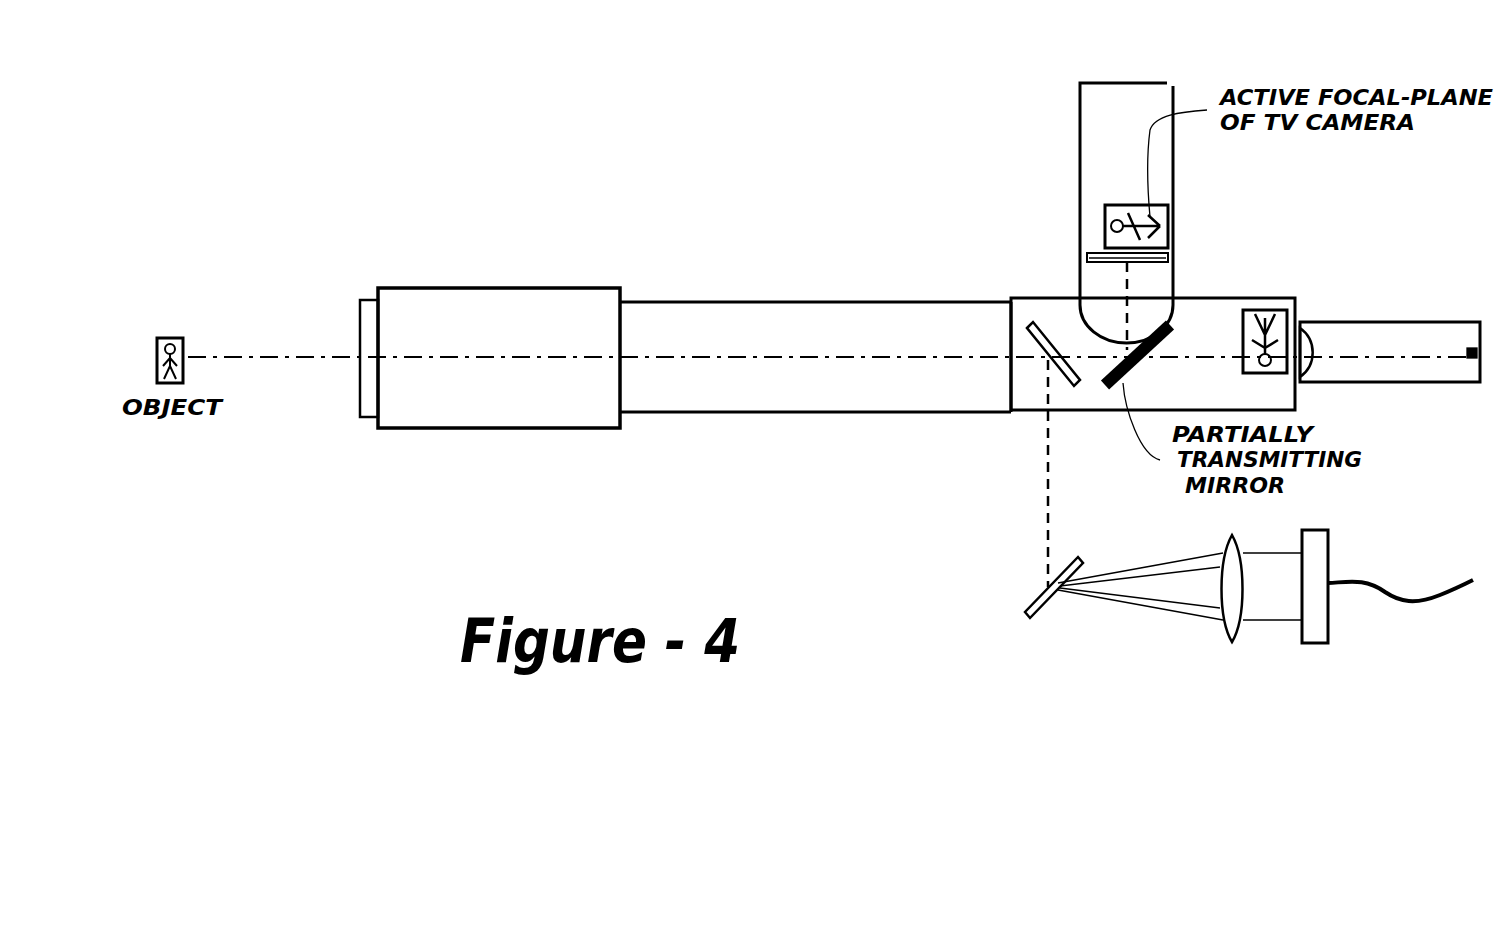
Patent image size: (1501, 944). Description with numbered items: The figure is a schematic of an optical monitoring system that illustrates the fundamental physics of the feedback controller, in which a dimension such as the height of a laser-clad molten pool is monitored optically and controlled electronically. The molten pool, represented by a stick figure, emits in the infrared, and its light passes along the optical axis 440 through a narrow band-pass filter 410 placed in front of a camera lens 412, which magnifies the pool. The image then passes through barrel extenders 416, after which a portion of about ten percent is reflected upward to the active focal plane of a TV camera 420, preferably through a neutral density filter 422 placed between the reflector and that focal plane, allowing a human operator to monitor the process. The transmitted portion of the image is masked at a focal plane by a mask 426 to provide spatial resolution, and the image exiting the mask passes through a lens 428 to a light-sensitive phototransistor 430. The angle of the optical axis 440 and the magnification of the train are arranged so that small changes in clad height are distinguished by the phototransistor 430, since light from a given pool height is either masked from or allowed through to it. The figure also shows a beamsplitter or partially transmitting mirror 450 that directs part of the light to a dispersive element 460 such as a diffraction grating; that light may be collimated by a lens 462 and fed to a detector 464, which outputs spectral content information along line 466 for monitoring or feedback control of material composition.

The narrow band-pass filter 410 is at (370, 418).
The camera lens 412 is at (525, 415).
The barrel extenders 416 is at (690, 412).
The optical axis 440 is at (812, 358).
The partially transmitting mirror 450 is at (1030, 337).
The TV camera 420 is at (1100, 121).
The neutral density filter 422 is at (1085, 257).
The mask 426 is at (1297, 383).
The lens 428 is at (1338, 300).
The phototransistor 430 is at (1472, 345).
The dispersive element 460 is at (1040, 595).
The lens 462 is at (1226, 644).
The detector 464 is at (1315, 633).
The line 466 is at (1427, 602).